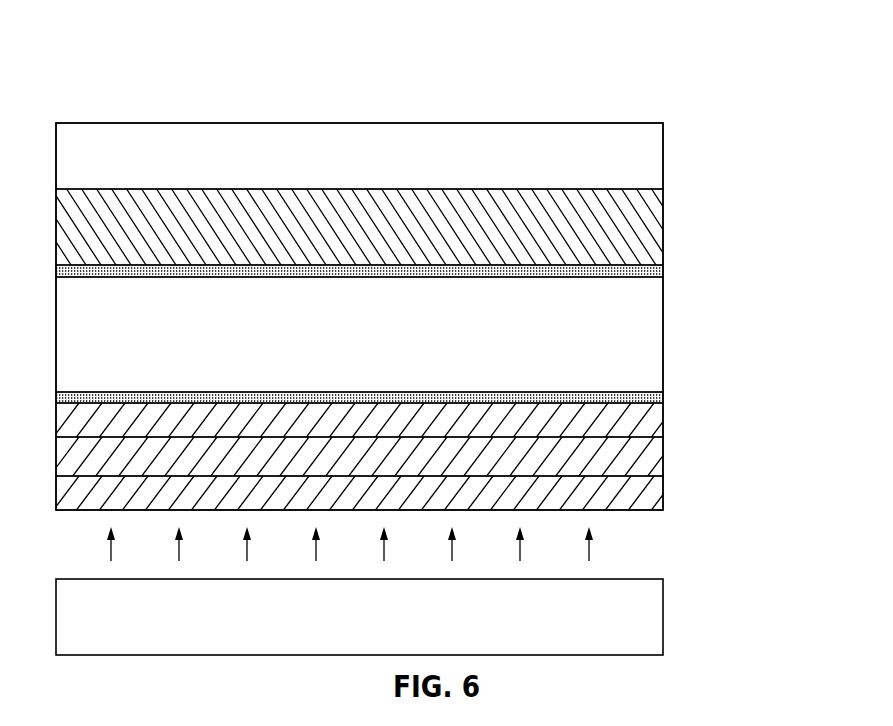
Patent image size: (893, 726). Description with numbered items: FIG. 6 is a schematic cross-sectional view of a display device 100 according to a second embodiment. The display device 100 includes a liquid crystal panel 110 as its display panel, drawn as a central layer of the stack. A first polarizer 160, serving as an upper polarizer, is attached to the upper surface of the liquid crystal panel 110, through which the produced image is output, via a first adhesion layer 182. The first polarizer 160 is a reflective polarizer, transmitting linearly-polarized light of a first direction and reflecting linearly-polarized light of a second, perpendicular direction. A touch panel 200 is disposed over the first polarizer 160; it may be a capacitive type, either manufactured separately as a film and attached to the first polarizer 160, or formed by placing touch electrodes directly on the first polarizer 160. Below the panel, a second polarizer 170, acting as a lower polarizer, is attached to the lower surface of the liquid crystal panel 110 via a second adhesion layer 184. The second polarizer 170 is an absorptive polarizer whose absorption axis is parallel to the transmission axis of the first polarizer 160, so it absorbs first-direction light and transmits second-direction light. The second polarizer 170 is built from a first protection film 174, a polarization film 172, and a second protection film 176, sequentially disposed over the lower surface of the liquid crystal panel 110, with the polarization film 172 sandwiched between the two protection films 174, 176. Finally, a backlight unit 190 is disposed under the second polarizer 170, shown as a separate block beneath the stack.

The display device 100 is at (622, 88).
The touch panel 200 is at (633, 155).
The first polarizer 160 is at (635, 227).
The first adhesion layer 182 is at (636, 268).
The liquid crystal panel 110 is at (633, 337).
The second adhesion layer 184 is at (635, 390).
The second polarizer 170 is at (424, 456).
The first protection film 174 is at (637, 425).
The polarization film 172 is at (637, 455).
The second protection film 176 is at (637, 493).
The backlight unit 190 is at (633, 632).